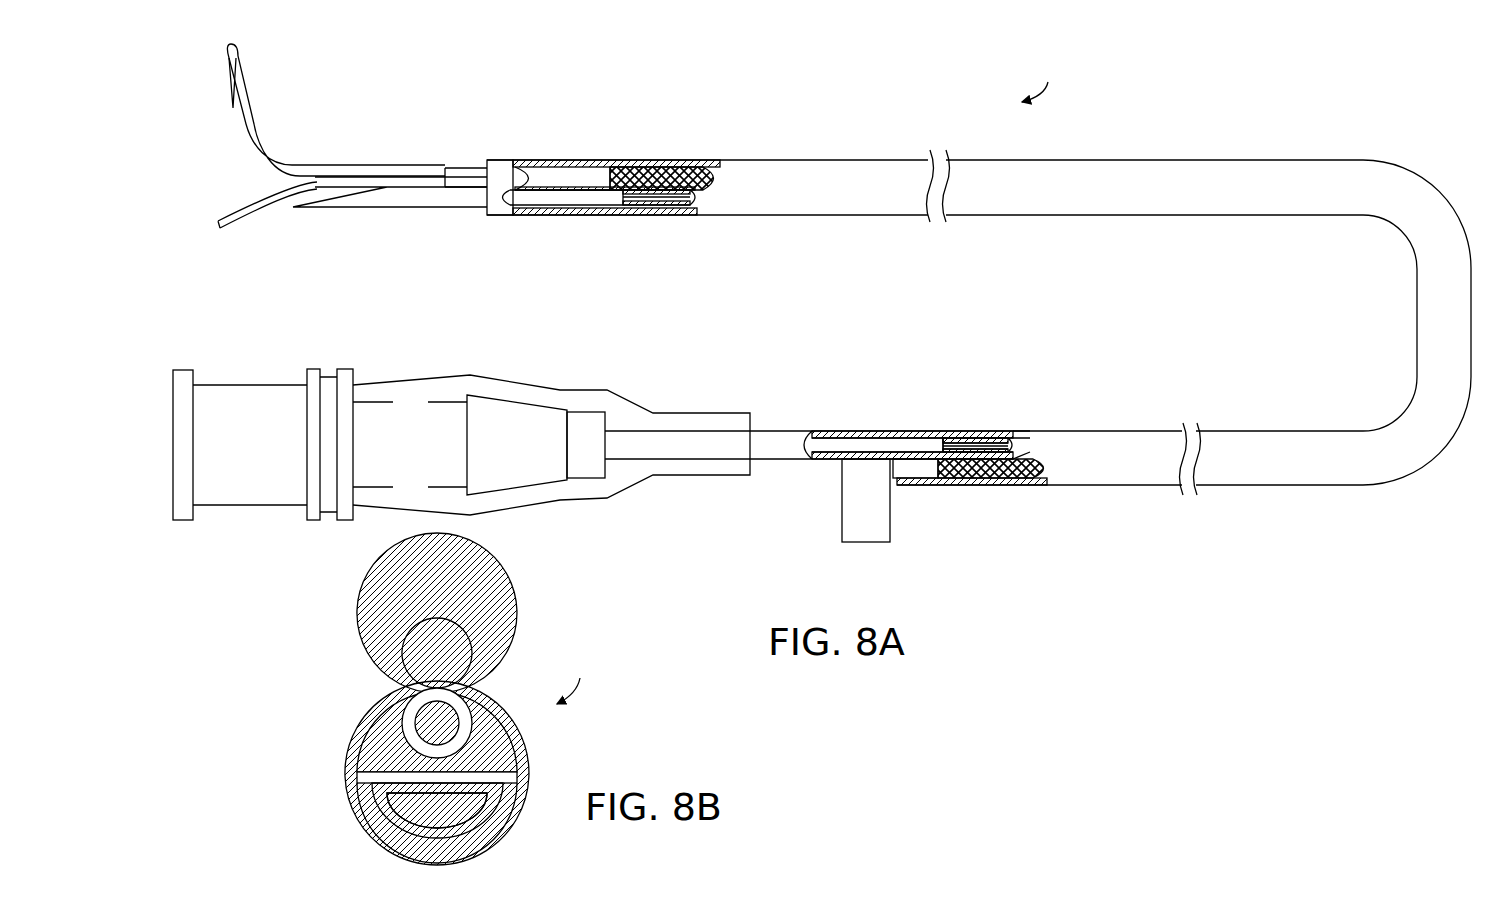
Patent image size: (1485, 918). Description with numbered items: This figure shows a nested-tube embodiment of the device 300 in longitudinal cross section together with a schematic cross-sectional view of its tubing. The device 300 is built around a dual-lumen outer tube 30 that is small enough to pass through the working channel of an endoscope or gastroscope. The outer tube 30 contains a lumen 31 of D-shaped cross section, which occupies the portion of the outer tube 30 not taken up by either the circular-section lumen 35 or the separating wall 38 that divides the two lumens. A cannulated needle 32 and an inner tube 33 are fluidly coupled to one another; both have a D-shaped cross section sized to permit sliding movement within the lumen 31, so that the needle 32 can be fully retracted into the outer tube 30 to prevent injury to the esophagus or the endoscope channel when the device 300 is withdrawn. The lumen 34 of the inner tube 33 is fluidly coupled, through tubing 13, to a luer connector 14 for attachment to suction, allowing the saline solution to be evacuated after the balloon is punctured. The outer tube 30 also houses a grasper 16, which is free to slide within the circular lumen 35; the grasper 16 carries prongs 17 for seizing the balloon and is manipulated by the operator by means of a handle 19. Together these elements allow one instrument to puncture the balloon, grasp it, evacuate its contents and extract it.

In FIG. 8A, the tubing 13 is at (628, 487).
In FIG. 8A, the luer connector 14 is at (313, 520).
In FIG. 8A, the grasper 16 is at (373, 163).
In FIG. 8B, the grasper 16 is at (432, 727).
In FIG. 8A, the prongs 17 is at (228, 92).
In FIG. 8A, the handle 19 is at (870, 544).
In FIG. 8A, the outer tube 30 is at (857, 159).
In FIG. 8B, the outer tube 30 is at (493, 686).
In FIG. 8A, the lumen 31 is at (912, 445).
In FIG. 8B, the lumen 31 is at (503, 810).
In FIG. 8A, the cannulated needle 32 is at (352, 208).
In FIG. 8A, the inner tube 33 is at (632, 215).
In FIG. 8B, the inner tube 33 is at (382, 793).
In FIG. 8A, the lumen 34 is at (668, 203).
In FIG. 8B, the lumen 34 is at (407, 805).
In FIG. 8A, the lumen 35 is at (678, 167).
In FIG. 8B, the lumen 35 is at (422, 700).
In FIG. 8A, the separating wall 38 is at (573, 187).
In FIG. 8B, the separating wall 38 is at (428, 767).
In FIG. 8A, the device 300 is at (1046, 79).
In FIG. 8B, the device 300 is at (581, 680).